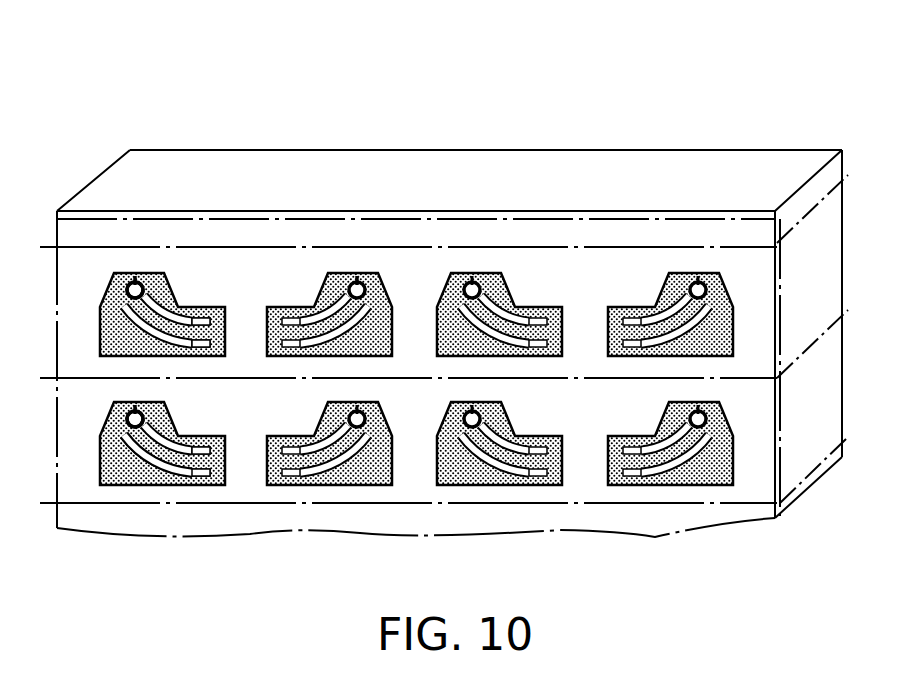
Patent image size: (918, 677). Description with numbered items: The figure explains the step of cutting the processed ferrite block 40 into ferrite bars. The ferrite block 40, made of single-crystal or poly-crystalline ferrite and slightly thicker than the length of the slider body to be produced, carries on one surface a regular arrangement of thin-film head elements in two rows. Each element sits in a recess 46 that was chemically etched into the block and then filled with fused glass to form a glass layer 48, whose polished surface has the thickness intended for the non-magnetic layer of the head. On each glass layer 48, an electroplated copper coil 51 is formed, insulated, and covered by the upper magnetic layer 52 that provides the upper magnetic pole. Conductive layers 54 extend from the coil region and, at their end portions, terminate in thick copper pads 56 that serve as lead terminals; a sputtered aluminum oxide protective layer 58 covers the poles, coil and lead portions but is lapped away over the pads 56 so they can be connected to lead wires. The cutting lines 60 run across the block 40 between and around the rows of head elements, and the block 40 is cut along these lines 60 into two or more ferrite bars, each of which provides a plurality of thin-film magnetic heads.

The ferrite block 40 is at (461, 117).
The recess 46 is at (105, 296).
The glass layer 48 is at (112, 290).
The coil 51 is at (127, 284).
The upper magnetic layer 52 is at (148, 276).
The conductive layer 54 is at (181, 471).
The pad 56 is at (205, 305).
The protective layer 58 is at (782, 525).
The cutting line 60 is at (827, 460).